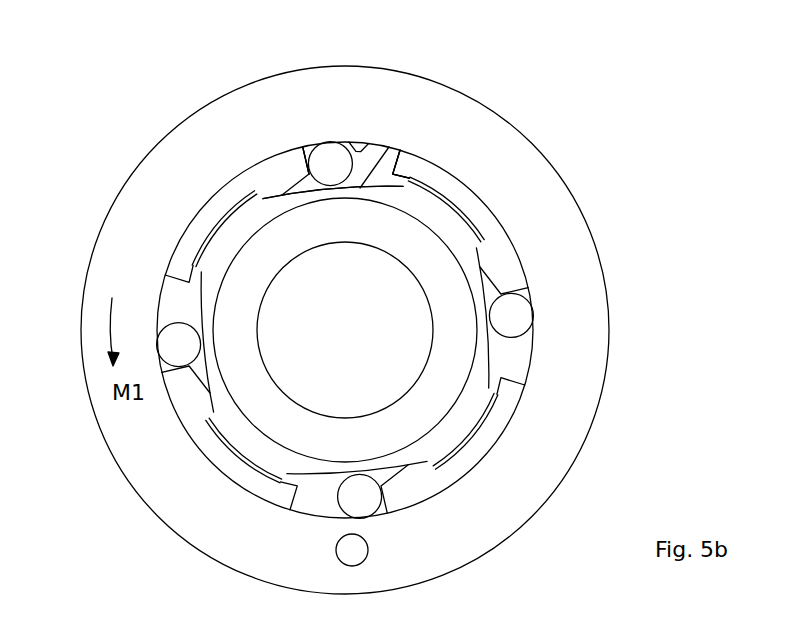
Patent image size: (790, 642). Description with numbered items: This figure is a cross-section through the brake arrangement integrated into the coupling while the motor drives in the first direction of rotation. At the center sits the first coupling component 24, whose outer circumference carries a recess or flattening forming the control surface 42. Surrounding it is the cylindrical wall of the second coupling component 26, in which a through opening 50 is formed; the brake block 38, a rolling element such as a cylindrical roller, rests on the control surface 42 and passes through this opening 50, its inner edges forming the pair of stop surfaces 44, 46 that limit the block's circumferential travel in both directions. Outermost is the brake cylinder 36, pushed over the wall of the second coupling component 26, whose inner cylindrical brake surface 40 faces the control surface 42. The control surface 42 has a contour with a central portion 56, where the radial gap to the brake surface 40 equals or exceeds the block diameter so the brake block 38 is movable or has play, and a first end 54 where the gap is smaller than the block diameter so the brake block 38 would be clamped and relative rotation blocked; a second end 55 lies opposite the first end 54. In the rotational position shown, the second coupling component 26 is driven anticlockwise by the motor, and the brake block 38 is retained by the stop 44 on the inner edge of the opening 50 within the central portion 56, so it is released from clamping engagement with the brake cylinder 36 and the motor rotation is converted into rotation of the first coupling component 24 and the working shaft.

The first coupling component 24 is at (460, 377).
The second coupling component 26 is at (319, 287).
The brake cylinder 36 is at (582, 367).
The brake block 38 is at (342, 175).
The inner cylindrical brake surface 40 is at (329, 82).
The control surface 42 is at (345, 270).
The brake block stop surface 44 is at (274, 87).
The brake block stop surface 46 is at (444, 95).
The through opening 50 is at (334, 99).
The first end of the control surface 54 is at (329, 262).
The second end of the control surface 55 is at (469, 115).
The central portion 56 is at (386, 94).